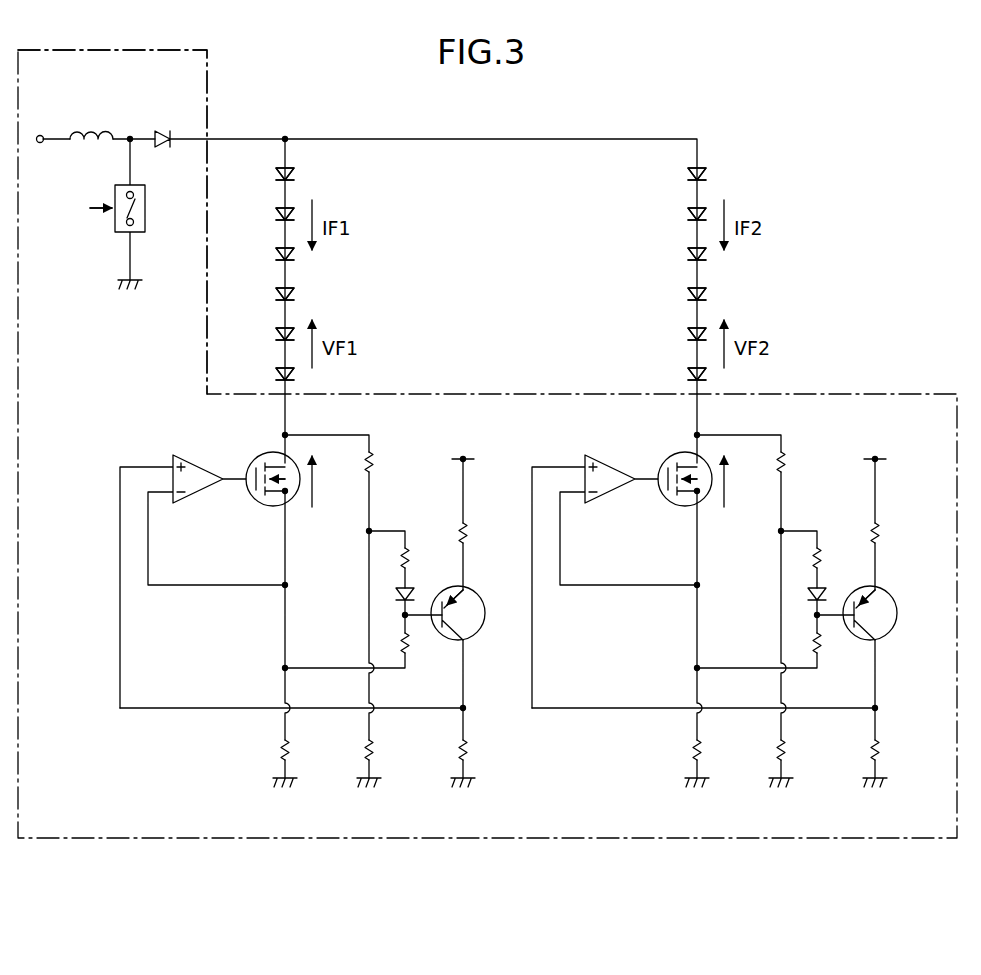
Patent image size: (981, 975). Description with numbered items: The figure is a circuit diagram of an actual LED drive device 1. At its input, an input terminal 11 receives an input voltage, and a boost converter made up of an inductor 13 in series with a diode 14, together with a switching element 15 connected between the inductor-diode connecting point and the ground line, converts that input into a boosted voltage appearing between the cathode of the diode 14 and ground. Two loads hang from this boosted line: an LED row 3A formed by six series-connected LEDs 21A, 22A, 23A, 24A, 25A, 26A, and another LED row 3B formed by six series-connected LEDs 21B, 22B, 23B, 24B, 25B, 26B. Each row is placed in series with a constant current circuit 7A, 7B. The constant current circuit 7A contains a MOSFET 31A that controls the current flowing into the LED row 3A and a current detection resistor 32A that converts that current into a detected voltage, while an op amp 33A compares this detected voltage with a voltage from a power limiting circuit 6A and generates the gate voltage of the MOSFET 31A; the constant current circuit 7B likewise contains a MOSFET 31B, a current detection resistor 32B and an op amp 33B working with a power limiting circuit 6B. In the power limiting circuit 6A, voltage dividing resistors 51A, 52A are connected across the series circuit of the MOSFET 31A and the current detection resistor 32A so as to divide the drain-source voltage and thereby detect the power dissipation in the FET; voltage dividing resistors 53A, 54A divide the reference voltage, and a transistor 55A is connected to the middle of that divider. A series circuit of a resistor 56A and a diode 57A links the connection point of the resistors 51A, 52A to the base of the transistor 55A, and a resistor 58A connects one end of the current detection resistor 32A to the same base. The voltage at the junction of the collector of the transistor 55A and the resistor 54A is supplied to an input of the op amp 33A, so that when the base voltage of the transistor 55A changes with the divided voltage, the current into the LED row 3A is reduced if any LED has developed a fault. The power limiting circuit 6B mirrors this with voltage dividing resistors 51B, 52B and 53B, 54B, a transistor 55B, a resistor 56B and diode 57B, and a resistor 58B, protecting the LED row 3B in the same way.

The LED drive device 1 is at (858, 393).
The input terminal 11 is at (42, 134).
The inductor 13 is at (90, 131).
The diode 14 is at (168, 131).
The switching element 15 is at (147, 223).
The LED row 3A is at (312, 178).
The LED row 3B is at (731, 263).
The LED 21A is at (276, 178).
The LED 22A is at (276, 218).
The LED 23A is at (276, 258).
The LED 24A is at (276, 298).
The LED 25A is at (276, 338).
The LED 26A is at (276, 378).
The LED 21B is at (667, 167).
The LED 22B is at (667, 207).
The LED 23B is at (667, 247).
The LED 24B is at (667, 287).
The LED 25B is at (667, 327).
The LED 26B is at (667, 367).
The constant current circuit 7A is at (242, 551).
The constant current circuit 7B is at (654, 551).
The op amp 33A is at (197, 460).
The op amp 33B is at (616, 559).
The MOSFET 31A is at (288, 500).
The MOSFET 31B is at (699, 491).
The current detection resistor 32A is at (280, 753).
The current detection resistor 32B is at (665, 745).
The power limiting circuit 6A is at (323, 633).
The power limiting circuit 6B is at (735, 633).
The voltage dividing resistor 51A is at (376, 465).
The voltage dividing resistor 51B is at (811, 471).
The voltage dividing resistor 52A is at (380, 753).
The voltage dividing resistor 52B is at (813, 743).
The voltage dividing resistor 53A is at (466, 522).
The voltage dividing resistor 53B is at (896, 514).
The voltage dividing resistor 54A is at (472, 753).
The voltage dividing resistor 54B is at (905, 743).
The transistor 55A is at (459, 590).
The transistor 55B is at (882, 597).
The resistor 56A is at (410, 553).
The resistor 56B is at (837, 540).
The diode 57A is at (411, 593).
The diode 57B is at (837, 577).
The resistor 58A is at (410, 650).
The resistor 58B is at (838, 662).